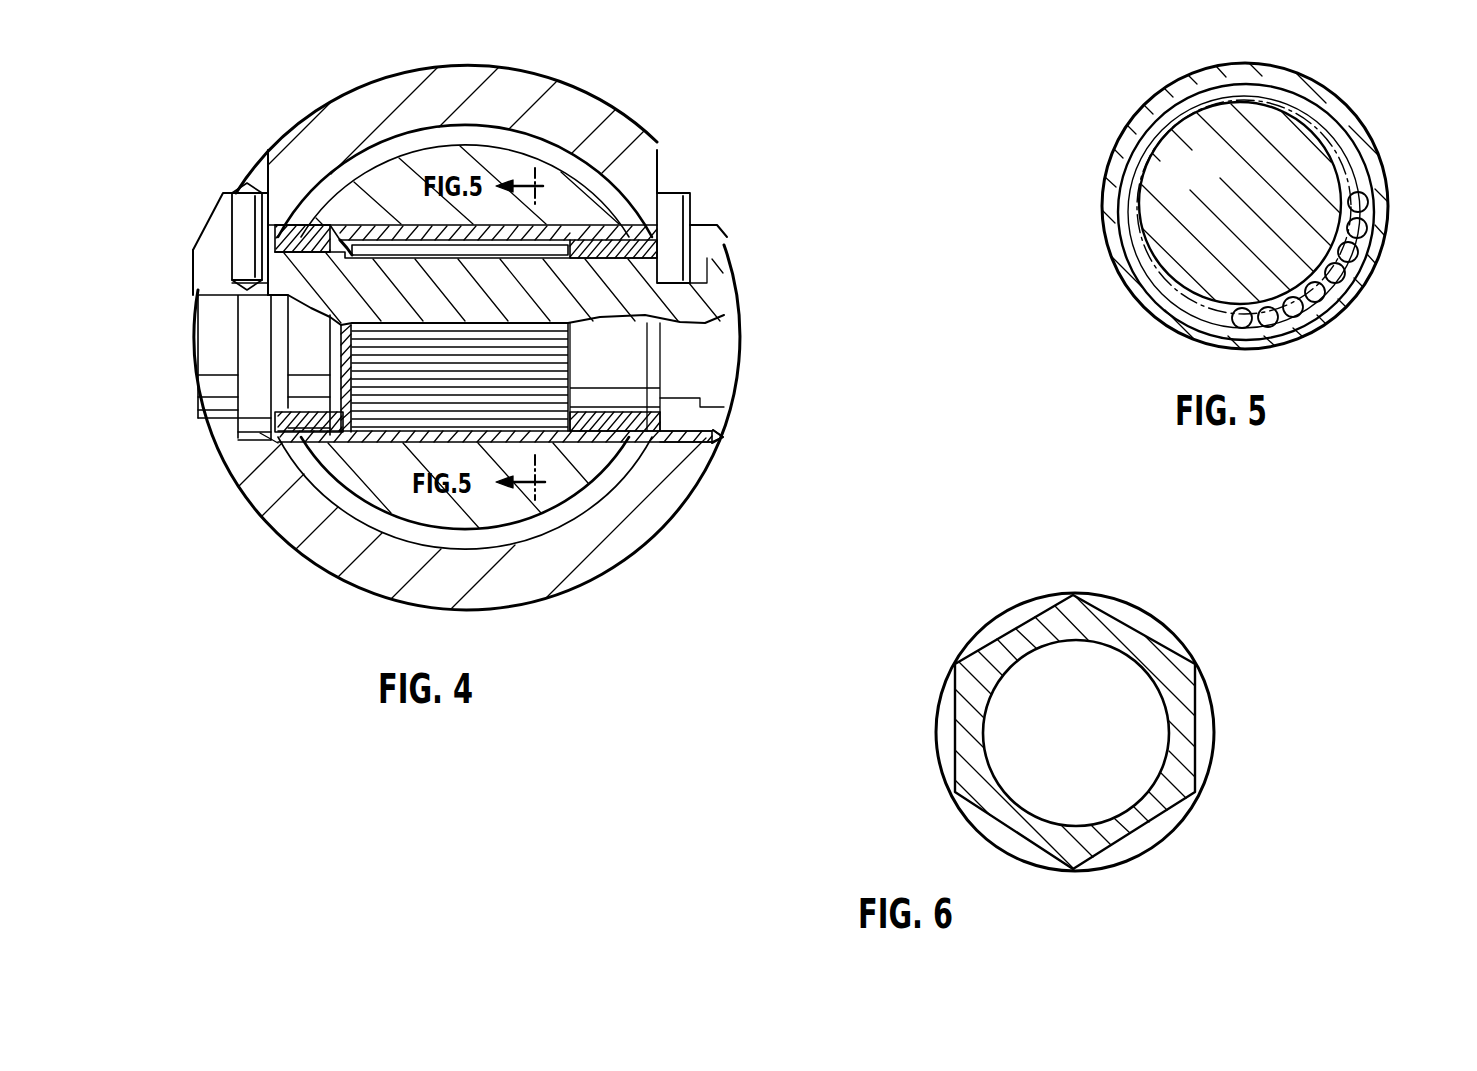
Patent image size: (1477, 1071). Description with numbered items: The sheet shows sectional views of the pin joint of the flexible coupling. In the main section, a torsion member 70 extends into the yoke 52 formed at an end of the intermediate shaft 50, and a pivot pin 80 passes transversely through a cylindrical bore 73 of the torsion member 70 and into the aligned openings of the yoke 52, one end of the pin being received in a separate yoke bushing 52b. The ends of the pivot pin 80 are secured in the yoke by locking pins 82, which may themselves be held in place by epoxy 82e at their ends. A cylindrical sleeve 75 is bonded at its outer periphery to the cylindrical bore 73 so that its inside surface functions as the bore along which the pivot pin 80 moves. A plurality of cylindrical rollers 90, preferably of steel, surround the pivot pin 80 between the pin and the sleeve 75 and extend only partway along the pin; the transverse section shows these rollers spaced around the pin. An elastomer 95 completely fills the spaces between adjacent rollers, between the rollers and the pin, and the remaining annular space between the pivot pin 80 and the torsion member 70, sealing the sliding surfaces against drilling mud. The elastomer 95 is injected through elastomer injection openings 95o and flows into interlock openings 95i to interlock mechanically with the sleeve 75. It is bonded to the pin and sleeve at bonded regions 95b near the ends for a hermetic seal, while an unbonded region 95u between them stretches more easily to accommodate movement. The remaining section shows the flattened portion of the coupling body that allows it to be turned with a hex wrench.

In FIG. 6, the intermediate shaft 50 is at (1210, 690).
In FIG. 4, the yoke 52 is at (633, 527).
In FIG. 4, the yoke bushing 52b is at (720, 440).
In FIG. 4, the torsion member 70 is at (416, 212).
In FIG. 4, the cylindrical bore 73 is at (473, 227).
In FIG. 4, the cylindrical sleeve 75 is at (366, 205).
In FIG. 5, the cylindrical sleeve 75 is at (1292, 97).
In FIG. 4, the pivot pin 80 is at (197, 423).
In FIG. 5, the pivot pin 80 is at (1212, 190).
In FIG. 4, the locking pin 82 is at (233, 230).
In FIG. 4, the epoxy 82e is at (247, 195).
In FIG. 4, the cylindrical rollers 90 is at (450, 256).
In FIG. 5, the cylindrical rollers 90 is at (1360, 202).
In FIG. 4, the elastomer 95 is at (278, 225).
In FIG. 5, the elastomer 95 is at (1358, 272).
In FIG. 4, the interlock openings 95i is at (598, 232).
In FIG. 4, the elastomer injection openings 95o is at (724, 428).
In FIG. 4, the unbonded region 95u is at (287, 230).
In FIG. 4, the bonded regions 95b is at (282, 246).